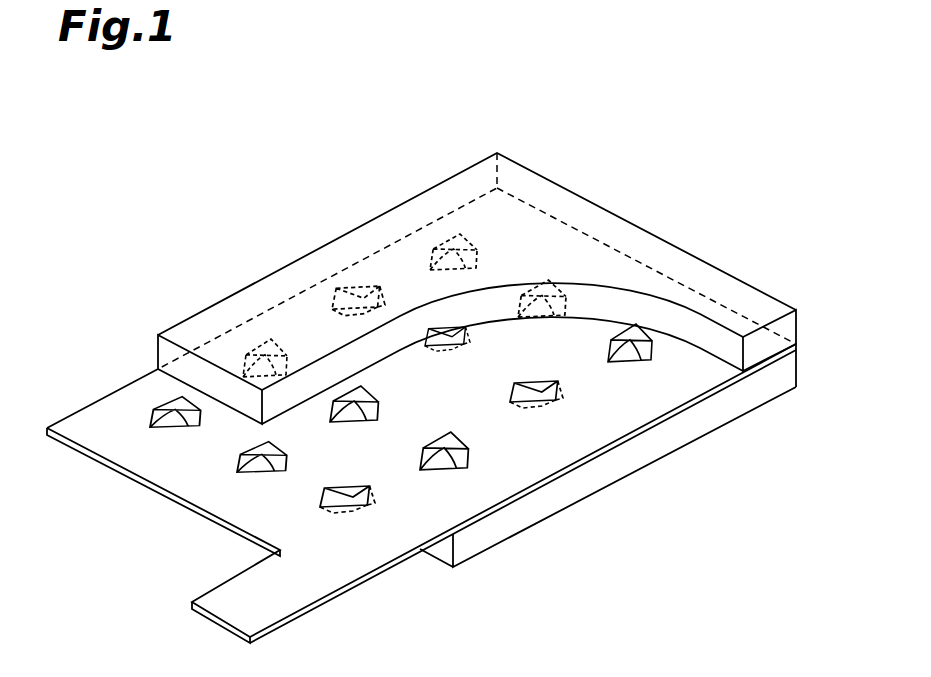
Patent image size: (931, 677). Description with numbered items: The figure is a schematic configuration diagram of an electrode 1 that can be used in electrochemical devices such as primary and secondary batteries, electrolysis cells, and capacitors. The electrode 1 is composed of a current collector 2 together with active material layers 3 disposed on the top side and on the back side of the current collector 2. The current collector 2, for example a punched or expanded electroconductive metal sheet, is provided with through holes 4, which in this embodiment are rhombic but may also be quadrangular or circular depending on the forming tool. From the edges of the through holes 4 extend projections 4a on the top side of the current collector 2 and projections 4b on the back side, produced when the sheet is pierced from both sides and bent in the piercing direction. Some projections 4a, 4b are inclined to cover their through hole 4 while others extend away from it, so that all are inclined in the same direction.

The electrode 1 is at (755, 87).
The current collector 2 is at (712, 393).
The active material layer 3 is at (778, 378).
The through hole 4 is at (356, 395).
The projection 4a is at (342, 402).
The projection 4b is at (479, 345).